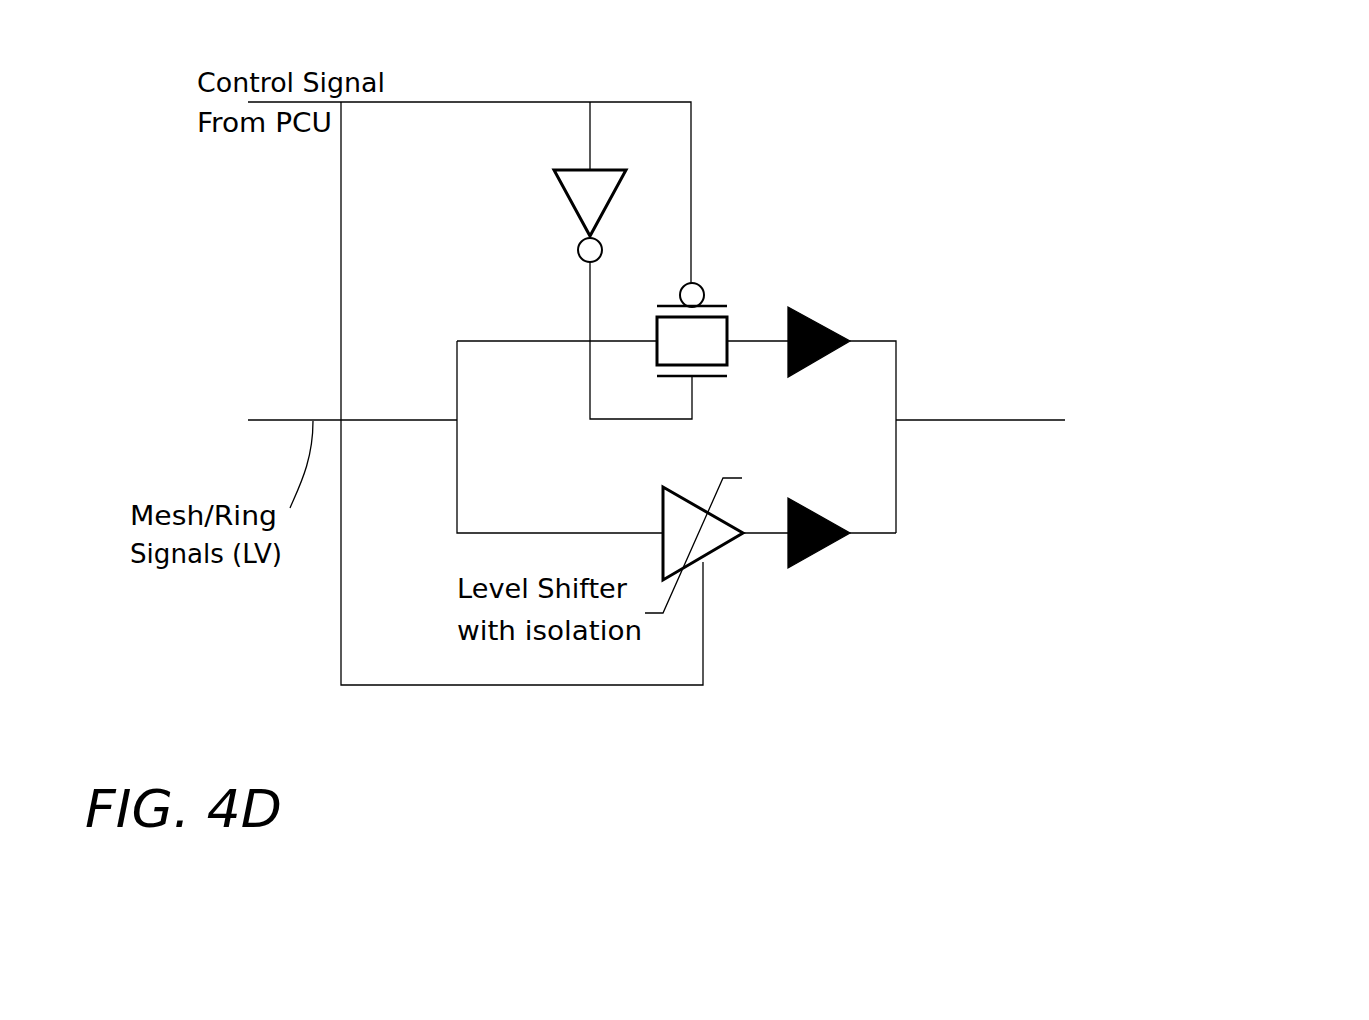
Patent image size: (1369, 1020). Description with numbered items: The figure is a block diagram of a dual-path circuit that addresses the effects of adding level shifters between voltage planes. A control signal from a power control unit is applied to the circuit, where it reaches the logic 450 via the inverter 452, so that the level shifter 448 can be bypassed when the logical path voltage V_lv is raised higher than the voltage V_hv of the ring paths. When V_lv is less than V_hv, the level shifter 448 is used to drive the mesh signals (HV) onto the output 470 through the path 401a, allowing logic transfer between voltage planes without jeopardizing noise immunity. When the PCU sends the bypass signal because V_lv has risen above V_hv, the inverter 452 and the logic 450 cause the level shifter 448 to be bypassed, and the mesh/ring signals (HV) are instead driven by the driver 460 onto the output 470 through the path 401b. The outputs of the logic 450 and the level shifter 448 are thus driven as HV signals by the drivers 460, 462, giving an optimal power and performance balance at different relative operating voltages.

The path 401a is at (960, 593).
The path 401b is at (983, 283).
The level shifter 448 is at (663, 512).
The logic 450 is at (728, 356).
The inverter 452 is at (570, 203).
The driver 460 is at (828, 356).
The driver 462 is at (848, 528).
The output 470 is at (987, 421).